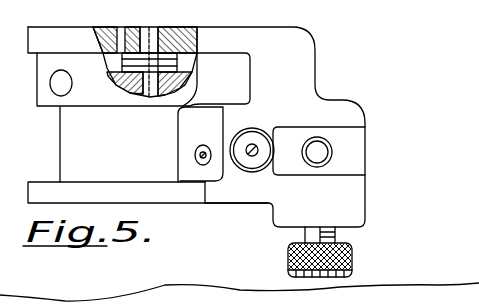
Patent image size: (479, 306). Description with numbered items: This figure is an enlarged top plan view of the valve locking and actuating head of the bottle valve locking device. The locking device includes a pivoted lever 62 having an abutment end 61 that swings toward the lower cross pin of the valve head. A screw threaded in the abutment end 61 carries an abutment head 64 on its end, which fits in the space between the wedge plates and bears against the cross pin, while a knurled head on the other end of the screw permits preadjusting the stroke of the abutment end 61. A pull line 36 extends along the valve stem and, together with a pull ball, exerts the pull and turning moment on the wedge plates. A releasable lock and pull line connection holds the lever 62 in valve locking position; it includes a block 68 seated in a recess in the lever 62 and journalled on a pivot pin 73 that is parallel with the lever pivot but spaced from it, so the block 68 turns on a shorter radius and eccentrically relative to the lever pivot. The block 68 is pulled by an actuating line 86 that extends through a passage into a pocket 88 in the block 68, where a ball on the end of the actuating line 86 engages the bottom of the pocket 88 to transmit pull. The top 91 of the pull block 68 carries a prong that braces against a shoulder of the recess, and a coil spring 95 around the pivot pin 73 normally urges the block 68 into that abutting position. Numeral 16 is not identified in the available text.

The supporting surface 16 is at (239, 294).
The pull line 36 is at (255, 147).
The abutment end 61 is at (348, 200).
The pivoted lever 62 is at (177, 197).
The abutment head 64 is at (355, 148).
The block 68 is at (95, 97).
The pivot pin 73 is at (152, 38).
The actuating line 86 is at (201, 157).
The pocket 88 is at (196, 155).
The top 91 is at (235, 80).
The coil spring 95 is at (180, 64).